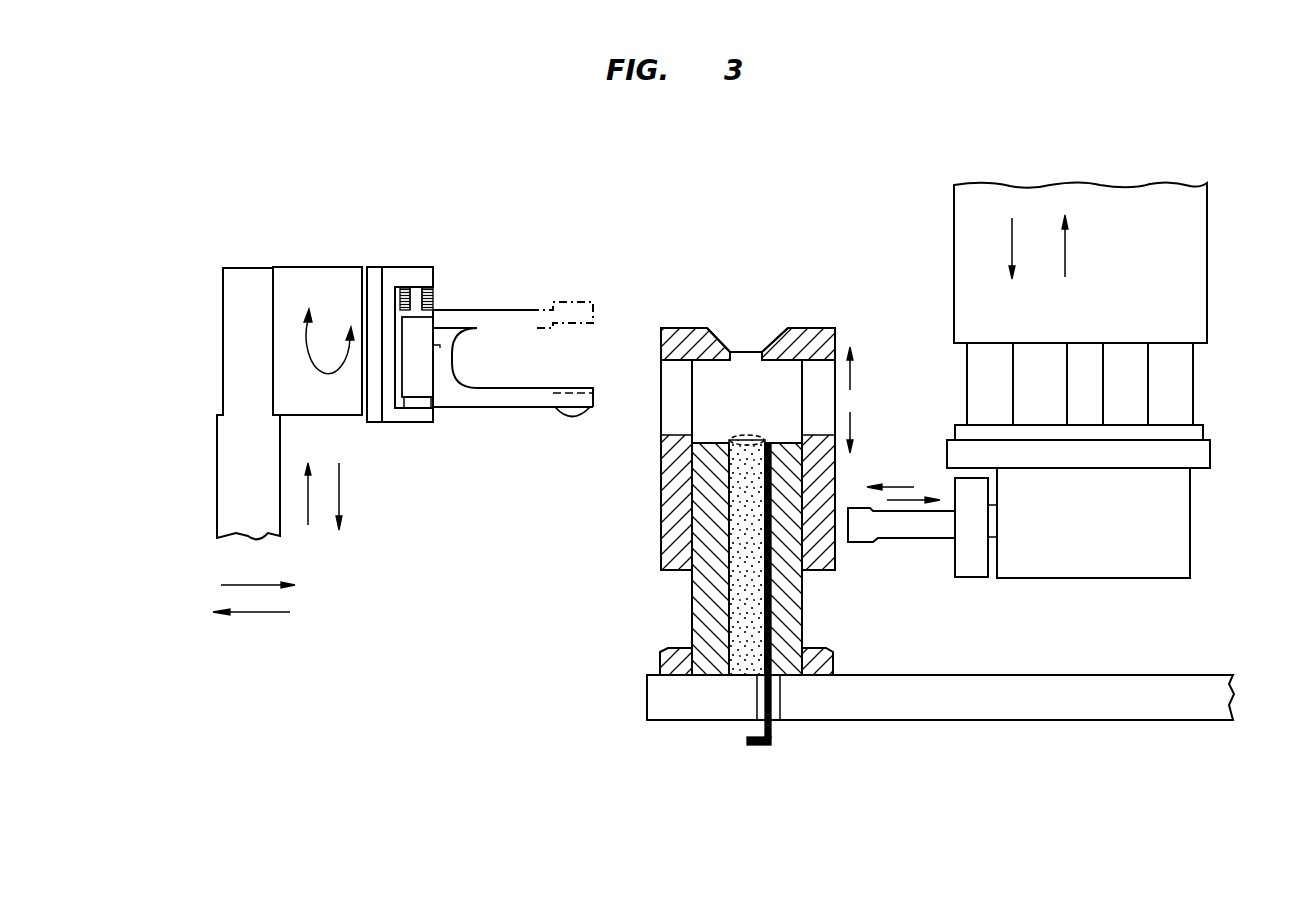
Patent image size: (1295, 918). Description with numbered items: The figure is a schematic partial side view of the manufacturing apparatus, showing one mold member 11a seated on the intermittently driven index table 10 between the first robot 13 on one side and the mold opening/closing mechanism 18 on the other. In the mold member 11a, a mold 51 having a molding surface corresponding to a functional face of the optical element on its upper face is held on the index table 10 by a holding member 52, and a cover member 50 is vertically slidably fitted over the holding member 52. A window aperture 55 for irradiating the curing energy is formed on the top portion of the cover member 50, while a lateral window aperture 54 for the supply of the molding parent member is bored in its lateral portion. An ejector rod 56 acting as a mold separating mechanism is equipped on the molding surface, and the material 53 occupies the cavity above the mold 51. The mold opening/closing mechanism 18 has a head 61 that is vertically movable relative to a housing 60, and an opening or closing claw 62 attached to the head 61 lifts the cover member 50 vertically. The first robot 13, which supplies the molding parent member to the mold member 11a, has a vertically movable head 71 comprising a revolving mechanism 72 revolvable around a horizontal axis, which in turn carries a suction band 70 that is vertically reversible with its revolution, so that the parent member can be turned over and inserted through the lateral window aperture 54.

The index table 10 is at (1057, 712).
The mold member 11a is at (728, 290).
The first robot 13 is at (289, 246).
The mold opening/closing mechanism 18 is at (1072, 164).
The cover member 50 is at (756, 292).
The mold 51 is at (743, 585).
The holding member 52 is at (668, 663).
The powder material 53 is at (725, 457).
The lateral window aperture 54 is at (661, 378).
The window aperture 55 is at (762, 327).
The ejector rod 56 is at (771, 740).
The housing 60 is at (1195, 290).
The head 61 is at (1172, 527).
The opening or closing claw 62 is at (897, 530).
The suction band 70 is at (487, 397).
The head 71 is at (235, 307).
The revolving mechanism 72 is at (342, 278).